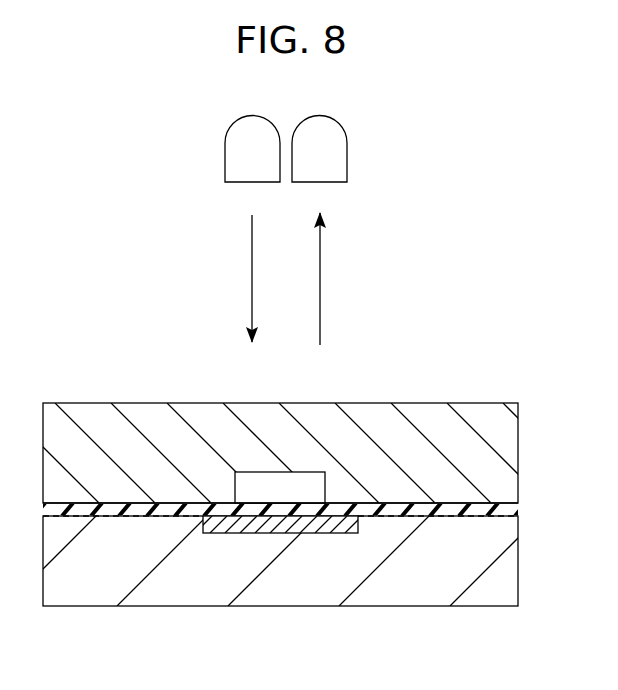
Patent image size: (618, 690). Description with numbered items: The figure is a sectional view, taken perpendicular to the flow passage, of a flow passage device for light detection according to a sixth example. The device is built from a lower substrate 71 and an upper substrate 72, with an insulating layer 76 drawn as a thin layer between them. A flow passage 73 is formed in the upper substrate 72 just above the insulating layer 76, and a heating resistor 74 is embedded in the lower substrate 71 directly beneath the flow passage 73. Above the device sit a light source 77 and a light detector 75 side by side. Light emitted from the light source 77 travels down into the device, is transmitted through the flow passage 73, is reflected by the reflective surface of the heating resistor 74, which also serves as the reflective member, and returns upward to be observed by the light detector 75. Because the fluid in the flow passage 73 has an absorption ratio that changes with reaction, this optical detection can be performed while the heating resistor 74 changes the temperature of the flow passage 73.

The lower substrate 71 is at (478, 558).
The upper substrate 72 is at (427, 418).
The flow passage 73 is at (237, 491).
The heating resistor 74 is at (273, 534).
The light detector 75 is at (340, 152).
The insulating layer 76 is at (470, 511).
The light source 77 is at (233, 152).